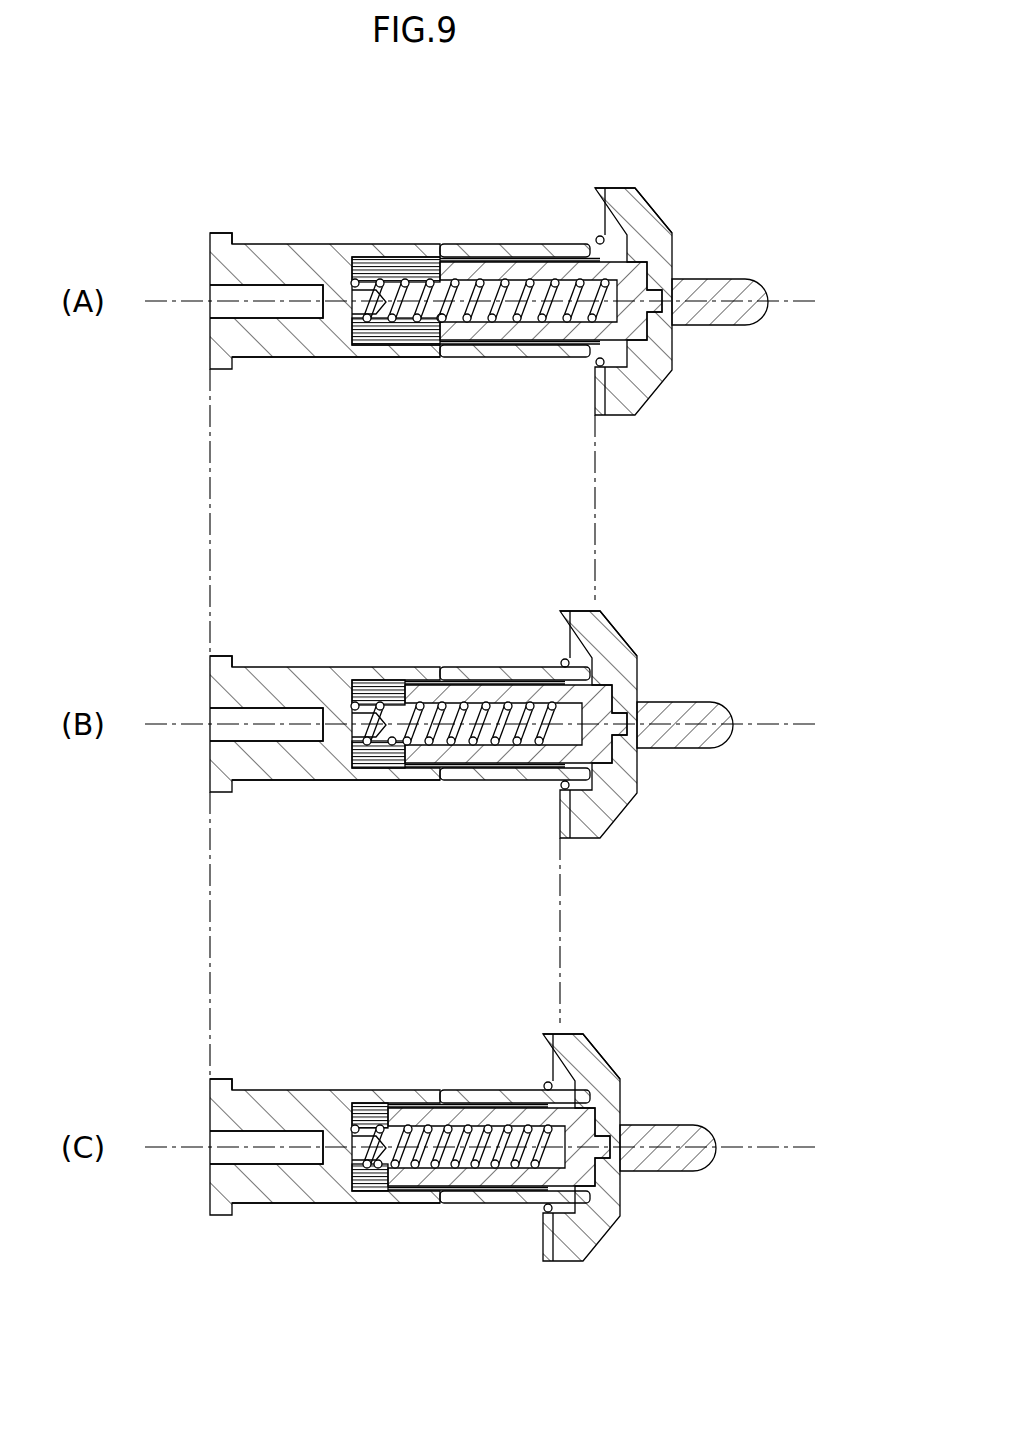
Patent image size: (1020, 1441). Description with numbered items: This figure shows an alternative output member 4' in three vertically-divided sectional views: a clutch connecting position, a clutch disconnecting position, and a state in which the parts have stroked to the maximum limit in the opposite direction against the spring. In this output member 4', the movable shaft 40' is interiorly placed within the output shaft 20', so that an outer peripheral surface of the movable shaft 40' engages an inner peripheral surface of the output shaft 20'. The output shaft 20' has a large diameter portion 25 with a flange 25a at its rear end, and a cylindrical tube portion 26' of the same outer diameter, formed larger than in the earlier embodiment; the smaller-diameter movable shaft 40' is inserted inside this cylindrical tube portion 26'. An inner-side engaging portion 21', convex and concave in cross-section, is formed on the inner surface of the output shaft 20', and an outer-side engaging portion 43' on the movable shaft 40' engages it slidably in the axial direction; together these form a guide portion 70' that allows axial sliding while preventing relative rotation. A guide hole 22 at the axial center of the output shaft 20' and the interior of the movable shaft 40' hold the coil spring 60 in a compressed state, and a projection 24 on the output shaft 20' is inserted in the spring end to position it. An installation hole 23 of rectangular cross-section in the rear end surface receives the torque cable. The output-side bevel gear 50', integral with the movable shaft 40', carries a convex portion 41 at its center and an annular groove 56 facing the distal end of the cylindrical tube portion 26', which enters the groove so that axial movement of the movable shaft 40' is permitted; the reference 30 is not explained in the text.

The output member 4' is at (554, 576).
The output shaft 20' is at (325, 698).
The inner-side engaging portion 21' is at (395, 681).
The guide hole 22 is at (507, 321).
The installation hole 23 is at (210, 306).
The projection 24 is at (378, 322).
The large diameter portion 25 is at (275, 358).
The flange 25a is at (220, 232).
The cylindrical tube portion 26' is at (508, 683).
The movable unit 30 is at (577, 208).
The movable shaft 40' is at (525, 682).
The convex portion 41 is at (742, 278).
The outer-side engaging portion 43' is at (494, 627).
The output-side bevel gear 50' is at (622, 707).
The annular groove 56 is at (597, 366).
The coil spring 60 is at (420, 282).
The guide portion 70' is at (494, 805).